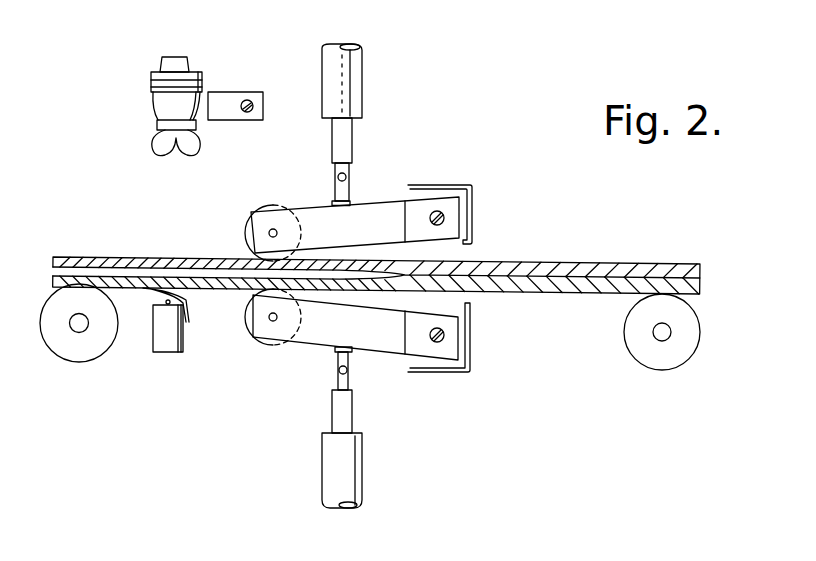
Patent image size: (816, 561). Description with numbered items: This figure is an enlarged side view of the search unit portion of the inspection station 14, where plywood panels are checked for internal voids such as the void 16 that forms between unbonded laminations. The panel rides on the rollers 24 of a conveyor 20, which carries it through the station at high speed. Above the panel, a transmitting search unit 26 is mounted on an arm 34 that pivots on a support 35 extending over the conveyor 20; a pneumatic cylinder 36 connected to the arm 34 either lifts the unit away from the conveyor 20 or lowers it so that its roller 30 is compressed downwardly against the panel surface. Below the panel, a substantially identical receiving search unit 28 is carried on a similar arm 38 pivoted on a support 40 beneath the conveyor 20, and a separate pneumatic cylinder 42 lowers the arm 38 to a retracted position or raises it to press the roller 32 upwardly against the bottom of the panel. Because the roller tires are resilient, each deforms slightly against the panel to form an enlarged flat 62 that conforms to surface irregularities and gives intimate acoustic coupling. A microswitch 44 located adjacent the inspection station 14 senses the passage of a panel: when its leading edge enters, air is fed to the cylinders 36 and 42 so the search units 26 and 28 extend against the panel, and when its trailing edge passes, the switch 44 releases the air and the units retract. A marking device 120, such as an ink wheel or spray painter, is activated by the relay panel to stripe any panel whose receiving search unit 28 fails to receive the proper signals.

The marking device 120 is at (157, 108).
The pneumatic cylinder 36 is at (348, 101).
The inspection station 14 is at (466, 131).
The arm 34 is at (377, 204).
The roller 30 is at (270, 205).
The transmitting search unit 26 is at (240, 233).
The support 35 is at (444, 218).
The void 16 is at (376, 260).
The arm 38 is at (380, 345).
The roller 32 is at (271, 346).
The flat 62 is at (250, 297).
The receiving search unit 28 is at (293, 348).
The support 40 is at (437, 342).
The pneumatic cylinder 42 is at (356, 470).
The microswitch 44 is at (167, 337).
The rollers 24 is at (68, 350).
The conveyor 20 is at (676, 368).